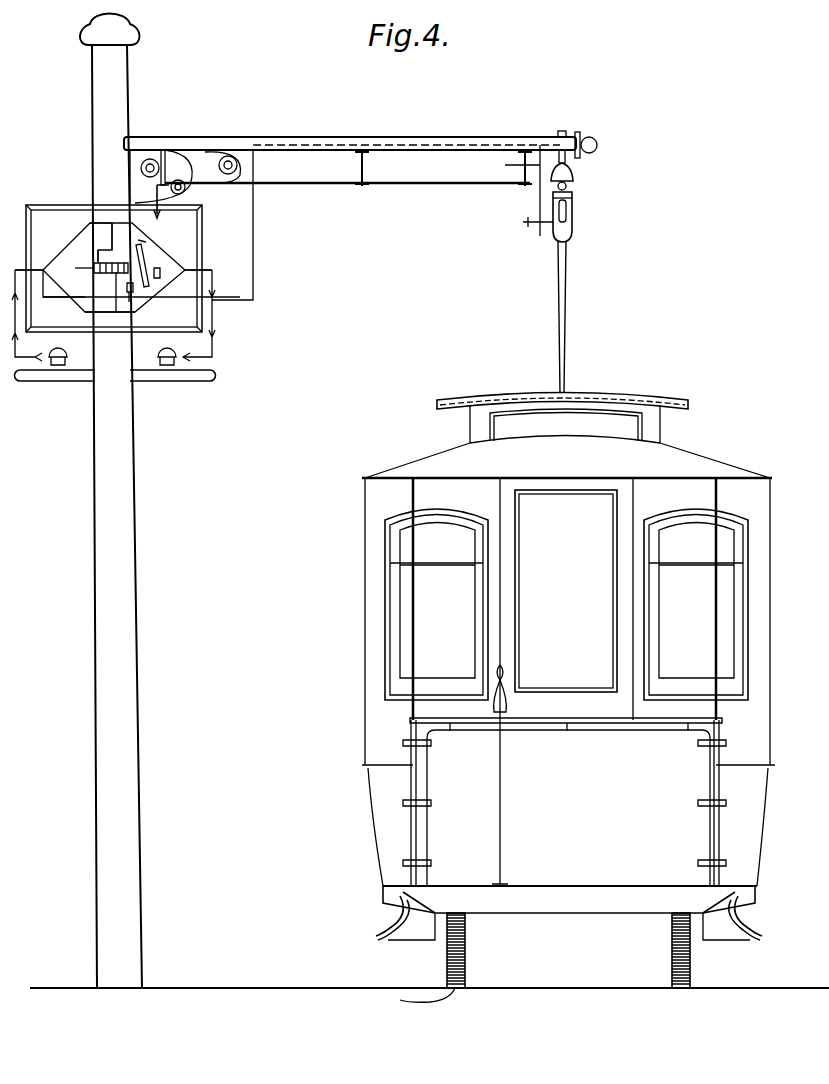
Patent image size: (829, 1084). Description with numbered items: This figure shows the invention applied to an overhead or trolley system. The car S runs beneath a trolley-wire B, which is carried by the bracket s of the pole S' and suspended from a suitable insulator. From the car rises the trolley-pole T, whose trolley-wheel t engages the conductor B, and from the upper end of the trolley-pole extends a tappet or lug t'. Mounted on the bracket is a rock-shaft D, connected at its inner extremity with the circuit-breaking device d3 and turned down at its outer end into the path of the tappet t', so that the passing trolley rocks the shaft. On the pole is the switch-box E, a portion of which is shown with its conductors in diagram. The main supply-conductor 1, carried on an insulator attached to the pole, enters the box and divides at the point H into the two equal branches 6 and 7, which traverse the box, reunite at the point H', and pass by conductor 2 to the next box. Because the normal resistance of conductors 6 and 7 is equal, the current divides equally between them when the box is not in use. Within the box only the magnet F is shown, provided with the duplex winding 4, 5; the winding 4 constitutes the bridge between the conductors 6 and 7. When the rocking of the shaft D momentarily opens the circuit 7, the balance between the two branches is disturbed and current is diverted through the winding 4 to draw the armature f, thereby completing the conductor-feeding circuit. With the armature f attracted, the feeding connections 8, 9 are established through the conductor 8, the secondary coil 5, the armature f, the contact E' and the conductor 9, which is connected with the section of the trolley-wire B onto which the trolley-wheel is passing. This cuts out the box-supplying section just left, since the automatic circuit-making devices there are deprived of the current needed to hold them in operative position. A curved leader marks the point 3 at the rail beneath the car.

The pole S' is at (124, 501).
The bracket s is at (400, 137).
The rock-shaft D is at (348, 180).
The conductor 9 is at (253, 240).
The trolley-wire B is at (566, 186).
The trolley-wheel t is at (582, 217).
The tappet t' is at (532, 233).
The trolley-pole T is at (565, 270).
The circuit-breaking device d3 is at (171, 210).
The switch-box E is at (114, 268).
The electromagnet F is at (101, 266).
The armature f is at (148, 263).
The contact E' is at (130, 299).
The dividing point H is at (39, 270).
The uniting point H' is at (193, 259).
The conductor 7 is at (101, 235).
The winding 4 is at (111, 258).
The winding 5 is at (111, 256).
The conductor 8 is at (64, 305).
The conductor 6 is at (110, 307).
The main supply-conductor 1 is at (55, 360).
The conductor 2 is at (173, 360).
The car S is at (568, 691).
The rail 3 is at (423, 1005).